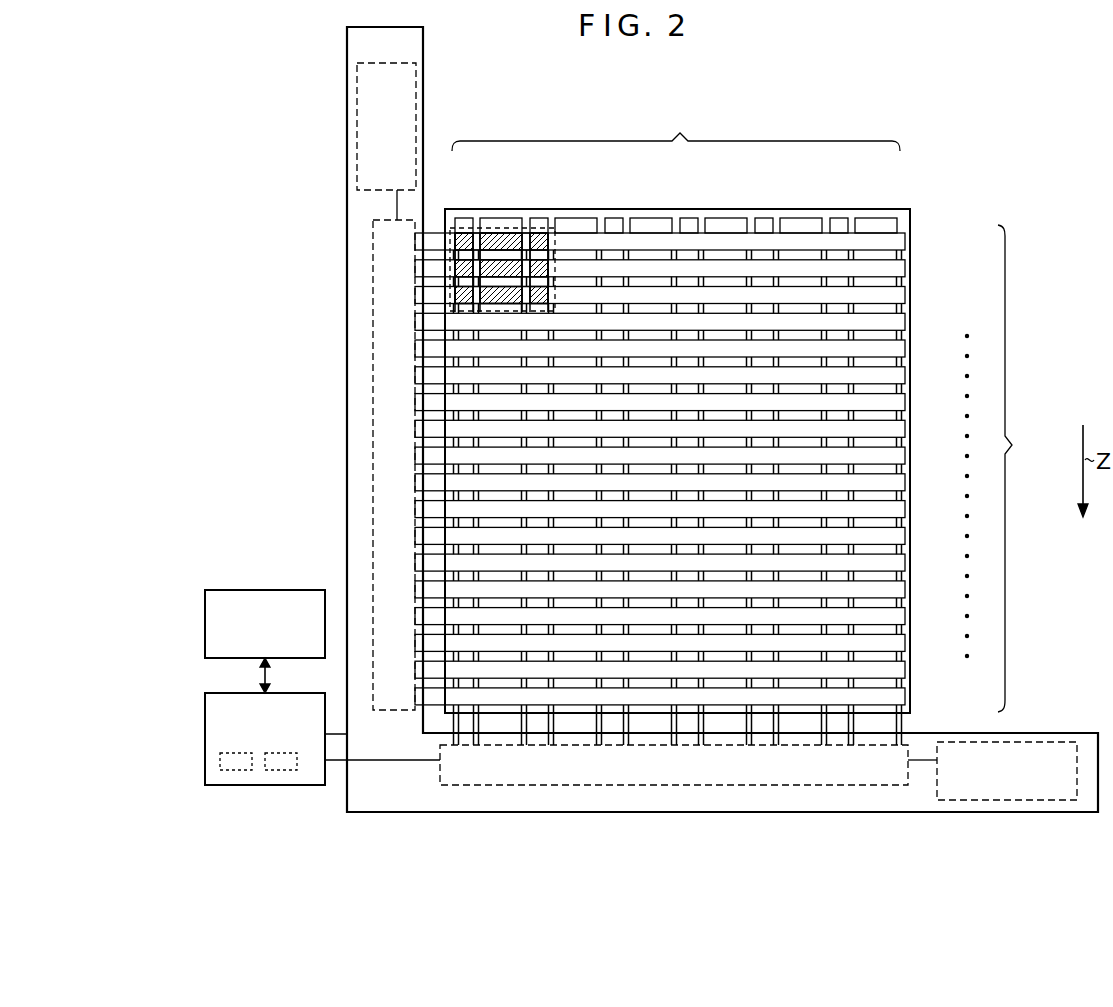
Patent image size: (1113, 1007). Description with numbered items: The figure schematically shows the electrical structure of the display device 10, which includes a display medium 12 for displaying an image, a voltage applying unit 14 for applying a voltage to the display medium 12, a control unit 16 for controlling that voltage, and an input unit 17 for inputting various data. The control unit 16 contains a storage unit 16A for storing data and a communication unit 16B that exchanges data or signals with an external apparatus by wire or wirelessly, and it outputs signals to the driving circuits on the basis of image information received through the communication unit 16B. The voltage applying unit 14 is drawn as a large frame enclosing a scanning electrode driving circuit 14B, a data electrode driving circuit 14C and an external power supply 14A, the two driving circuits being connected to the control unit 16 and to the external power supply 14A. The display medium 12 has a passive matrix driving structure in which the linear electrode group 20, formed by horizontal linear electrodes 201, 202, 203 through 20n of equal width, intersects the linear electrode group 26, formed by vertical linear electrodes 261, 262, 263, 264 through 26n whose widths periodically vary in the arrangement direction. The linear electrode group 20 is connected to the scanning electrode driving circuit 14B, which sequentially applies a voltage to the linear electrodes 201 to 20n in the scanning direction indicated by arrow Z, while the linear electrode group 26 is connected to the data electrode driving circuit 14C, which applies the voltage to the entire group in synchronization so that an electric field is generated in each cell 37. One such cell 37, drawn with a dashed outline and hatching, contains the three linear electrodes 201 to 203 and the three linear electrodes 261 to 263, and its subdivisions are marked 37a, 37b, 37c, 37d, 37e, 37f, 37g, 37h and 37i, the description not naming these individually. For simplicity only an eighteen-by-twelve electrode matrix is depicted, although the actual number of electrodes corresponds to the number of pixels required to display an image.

The display device 10 is at (934, 108).
The display medium 12 is at (910, 209).
The voltage applying unit 14 is at (423, 47).
The external power supply 14A is at (357, 112).
The scanning electrode driving circuit 14B is at (373, 290).
The data electrode driving circuit 14C is at (655, 786).
The control unit 16 is at (205, 742).
The storage unit 16A is at (238, 770).
The communication unit 16B is at (282, 770).
The input unit 17 is at (264, 590).
The linear electrode group 20 is at (735, 468).
The linear electrode 201 is at (907, 241).
The linear electrode 202 is at (907, 269).
The linear electrode 203 is at (907, 296).
The linear electrode 20n is at (907, 694).
The linear electrode group 26 is at (676, 170).
The linear electrode 261 is at (465, 218).
The linear electrode 262 is at (500, 218).
The linear electrode 263 is at (540, 218).
The linear electrode 264 is at (580, 218).
The linear electrode 26n is at (875, 218).
The cell 37 is at (450, 228).
The pixel row portion a 37a is at (447, 241).
The pixel row portion b 37b is at (447, 268).
The pixel row portion c 37c is at (447, 295).
The pixel column d 37d is at (497, 240).
The pixel column e 37e is at (470, 310).
The pixel column f 37f is at (500, 310).
The pixel row g 37g is at (553, 246).
The pixel row h 37h is at (553, 272).
The pixel row i 37i is at (553, 298).